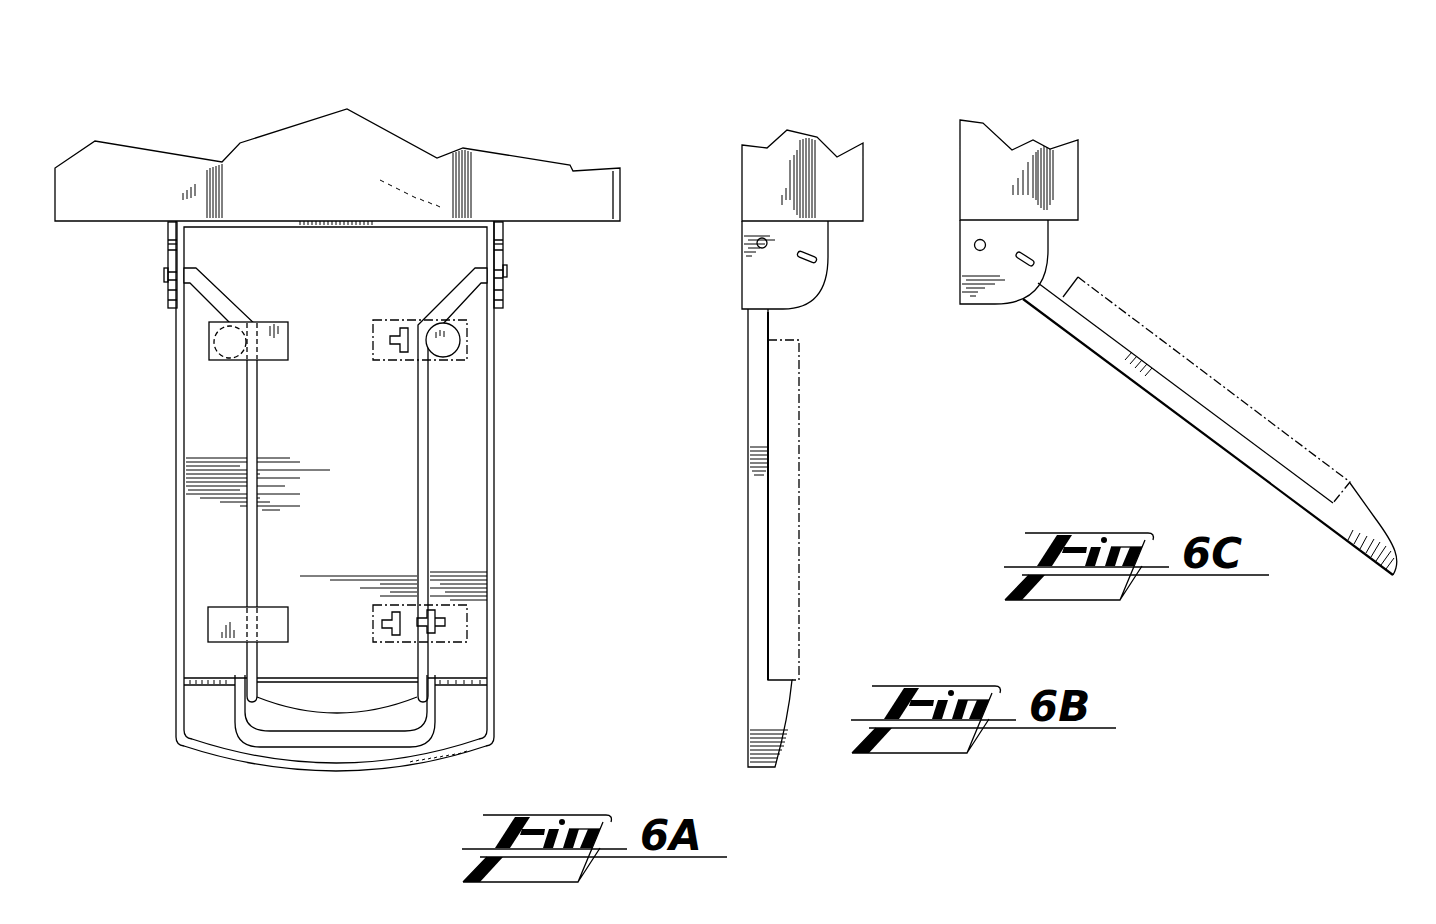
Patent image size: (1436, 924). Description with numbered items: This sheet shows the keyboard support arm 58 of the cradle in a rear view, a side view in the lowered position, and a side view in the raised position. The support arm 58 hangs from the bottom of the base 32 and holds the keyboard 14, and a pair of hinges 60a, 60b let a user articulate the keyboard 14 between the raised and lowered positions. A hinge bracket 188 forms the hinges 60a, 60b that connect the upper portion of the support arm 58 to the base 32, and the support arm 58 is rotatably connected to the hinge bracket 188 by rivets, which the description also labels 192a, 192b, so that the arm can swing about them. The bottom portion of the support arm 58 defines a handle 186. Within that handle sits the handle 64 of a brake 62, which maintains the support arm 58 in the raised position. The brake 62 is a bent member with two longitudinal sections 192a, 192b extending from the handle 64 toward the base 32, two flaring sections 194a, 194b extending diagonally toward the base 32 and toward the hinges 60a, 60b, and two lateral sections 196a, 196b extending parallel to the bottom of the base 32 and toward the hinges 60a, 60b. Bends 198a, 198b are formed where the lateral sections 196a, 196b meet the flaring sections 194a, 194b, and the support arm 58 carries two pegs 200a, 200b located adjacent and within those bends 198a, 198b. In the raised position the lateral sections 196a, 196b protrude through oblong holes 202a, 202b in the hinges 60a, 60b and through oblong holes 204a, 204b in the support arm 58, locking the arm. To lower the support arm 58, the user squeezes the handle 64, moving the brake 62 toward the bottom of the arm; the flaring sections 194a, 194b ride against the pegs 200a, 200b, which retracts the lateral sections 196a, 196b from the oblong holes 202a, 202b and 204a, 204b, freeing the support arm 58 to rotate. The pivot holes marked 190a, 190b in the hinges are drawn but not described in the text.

In FIG. 6B, the keyboard 14 is at (800, 413).
In FIG. 6A, the base 32 is at (573, 187).
In FIG. 6B, the base 32 is at (840, 177).
In FIG. 6C, the base 32 is at (1065, 153).
In FIG. 6A, the support arm 58 is at (492, 80).
In FIG. 6B, the support arm 58 is at (752, 105).
In FIG. 6C, the support arm 58 is at (1023, 118).
In FIG. 6A, the hinge 60a is at (170, 255).
In FIG. 6A, the hinge 60b is at (502, 252).
In FIG. 6B, the hinge 60b is at (740, 258).
In FIG. 6C, the hinge 60b is at (963, 257).
In FIG. 6A, the brake 62 is at (425, 655).
In FIG. 6A, the handle 64 is at (362, 722).
In FIG. 6A, the handle 186 is at (277, 740).
In FIG. 6A, the hinge bracket 188 is at (300, 218).
In FIG. 6A, the pivot hole 190a is at (170, 240).
In FIG. 6A, the pivot hole 190b is at (502, 245).
In FIG. 6B, the pivot hole 190b is at (753, 243).
In FIG. 6C, the pivot hole 190b is at (980, 245).
In FIG. 6A, the longitudinal section 192a is at (258, 538).
In FIG. 6A, the longitudinal section 192b is at (428, 540).
In FIG. 6A, the flaring section 194a is at (228, 302).
In FIG. 6A, the flaring section 194b is at (450, 292).
In FIG. 6C, the flaring section 194b is at (1210, 429).
In FIG. 6A, the lateral section 196a is at (185, 266).
In FIG. 6A, the lateral section 196b is at (483, 267).
In FIG. 6C, the lateral section 196b is at (1047, 255).
In FIG. 6A, the bend 198a is at (290, 335).
In FIG. 6A, the bend 198b is at (432, 347).
In FIG. 6A, the peg 200a is at (228, 348).
In FIG. 6A, the peg 200b is at (473, 343).
In FIG. 6C, the peg 200b is at (1206, 390).
In FIG. 6A, the oblong hole 202a is at (155, 292).
In FIG. 6A, the oblong hole 202b is at (512, 268).
In FIG. 6B, the oblong hole 202b is at (803, 264).
In FIG. 6C, the oblong hole 202b is at (1028, 262).
In FIG. 6A, the oblong hole 204a is at (196, 304).
In FIG. 6A, the oblong hole 204b is at (478, 302).